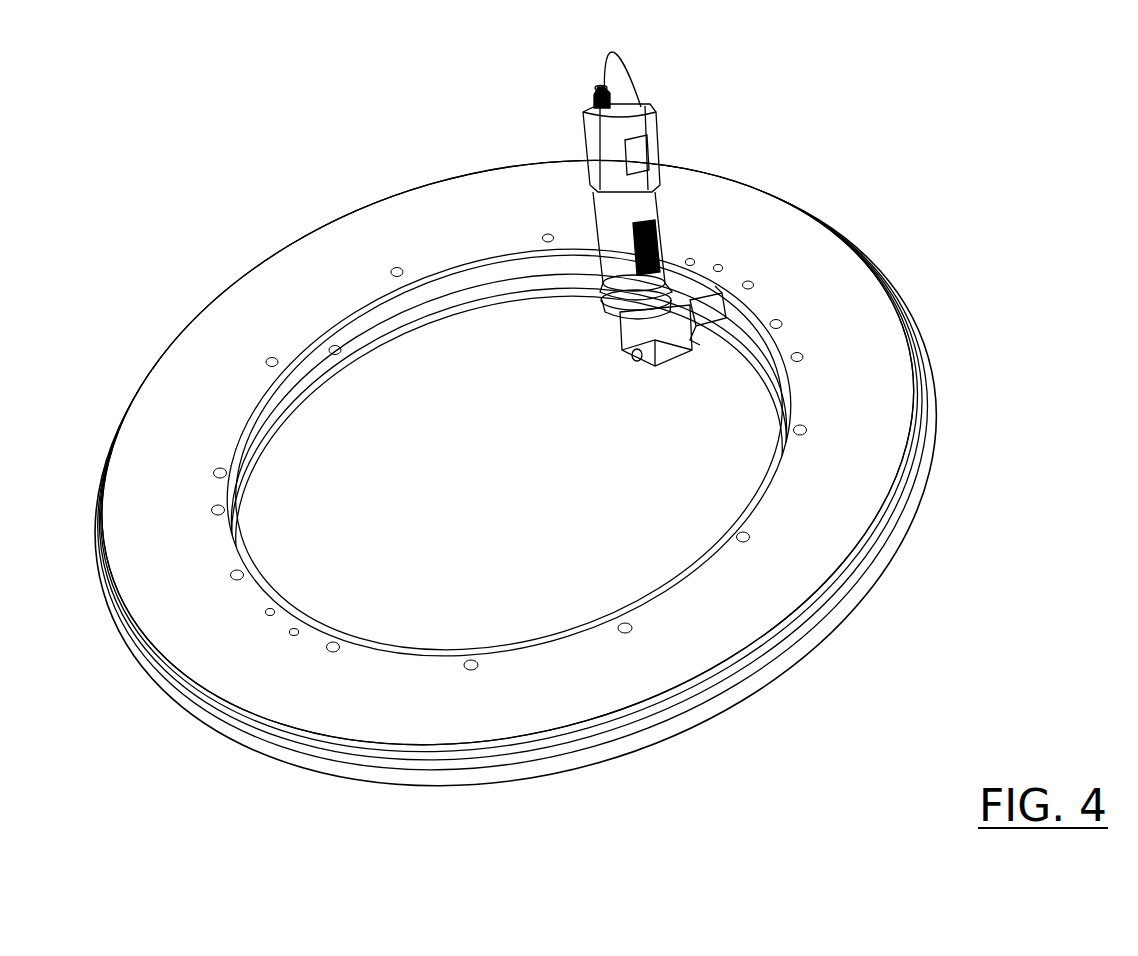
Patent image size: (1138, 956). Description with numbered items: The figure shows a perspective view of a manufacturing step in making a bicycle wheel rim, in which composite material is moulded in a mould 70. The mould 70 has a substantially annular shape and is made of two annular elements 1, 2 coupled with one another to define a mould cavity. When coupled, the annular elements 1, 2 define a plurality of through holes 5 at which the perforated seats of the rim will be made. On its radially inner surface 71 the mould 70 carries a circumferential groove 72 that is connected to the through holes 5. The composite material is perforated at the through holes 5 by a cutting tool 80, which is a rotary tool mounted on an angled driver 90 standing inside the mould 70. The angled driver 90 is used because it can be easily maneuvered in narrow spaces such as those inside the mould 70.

The annular element 1 is at (509, 407).
The annular element 2 is at (326, 212).
The through holes 5 is at (527, 272).
The mould 70 is at (861, 213).
The radially inner surface 71 is at (298, 397).
The circumferential groove 72 is at (480, 285).
The cutting tool 80 is at (712, 300).
The angled driver 90 is at (667, 120).